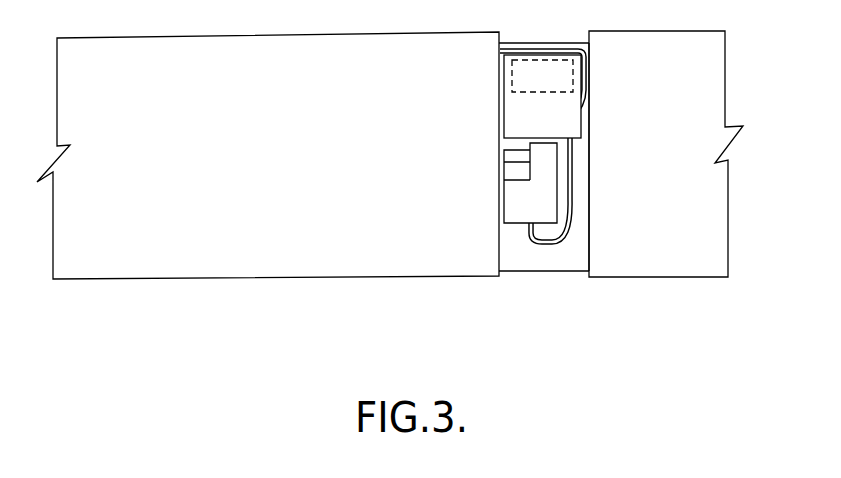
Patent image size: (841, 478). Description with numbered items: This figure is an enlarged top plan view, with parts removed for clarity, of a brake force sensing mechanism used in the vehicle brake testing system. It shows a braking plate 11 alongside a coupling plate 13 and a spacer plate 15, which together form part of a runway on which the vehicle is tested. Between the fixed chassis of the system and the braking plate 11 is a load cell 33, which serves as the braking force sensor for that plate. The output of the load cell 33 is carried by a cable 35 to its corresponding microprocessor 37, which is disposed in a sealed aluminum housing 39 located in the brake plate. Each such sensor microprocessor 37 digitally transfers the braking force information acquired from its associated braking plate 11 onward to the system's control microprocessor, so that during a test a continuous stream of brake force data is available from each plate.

The braking plate 11 is at (338, 149).
The coupling plate 13 is at (562, 272).
The spacer plate 15 is at (670, 148).
The load cell 33 is at (545, 213).
The cable 35 is at (544, 241).
The microprocessor 37 is at (537, 92).
The sealed aluminum housing 39 is at (588, 92).